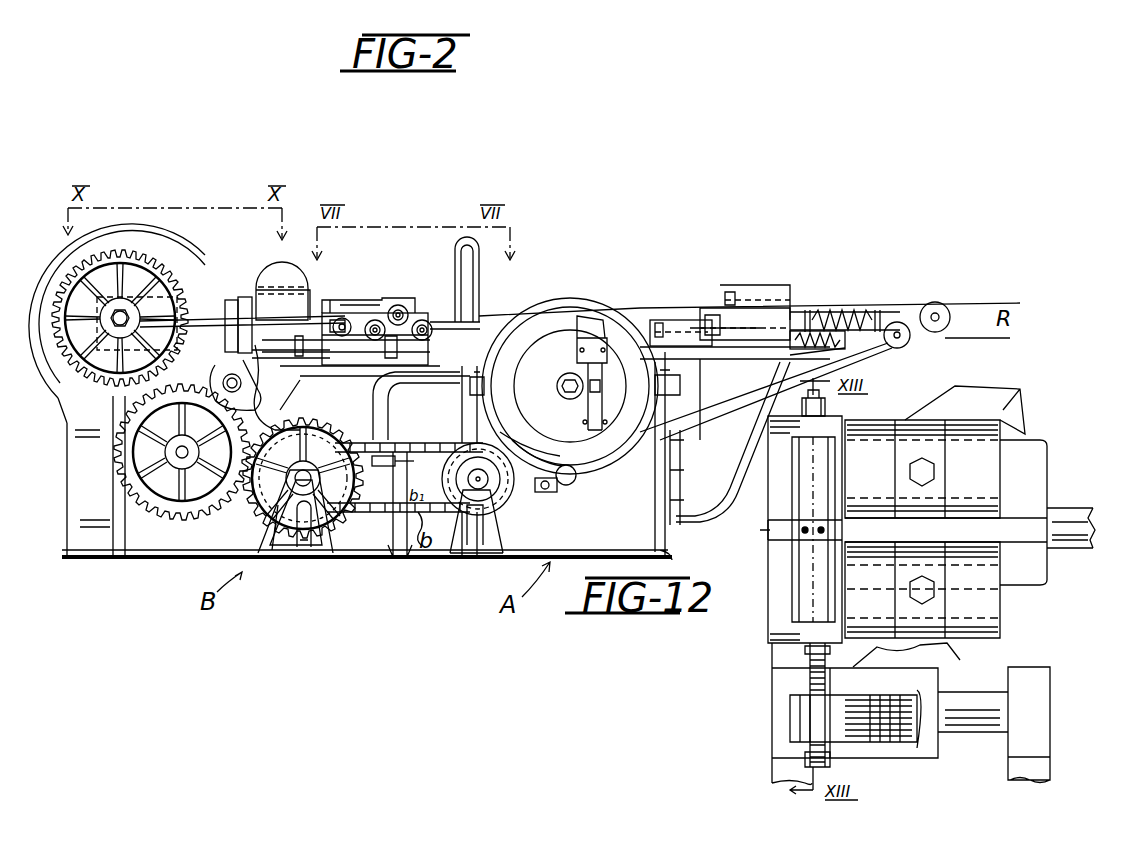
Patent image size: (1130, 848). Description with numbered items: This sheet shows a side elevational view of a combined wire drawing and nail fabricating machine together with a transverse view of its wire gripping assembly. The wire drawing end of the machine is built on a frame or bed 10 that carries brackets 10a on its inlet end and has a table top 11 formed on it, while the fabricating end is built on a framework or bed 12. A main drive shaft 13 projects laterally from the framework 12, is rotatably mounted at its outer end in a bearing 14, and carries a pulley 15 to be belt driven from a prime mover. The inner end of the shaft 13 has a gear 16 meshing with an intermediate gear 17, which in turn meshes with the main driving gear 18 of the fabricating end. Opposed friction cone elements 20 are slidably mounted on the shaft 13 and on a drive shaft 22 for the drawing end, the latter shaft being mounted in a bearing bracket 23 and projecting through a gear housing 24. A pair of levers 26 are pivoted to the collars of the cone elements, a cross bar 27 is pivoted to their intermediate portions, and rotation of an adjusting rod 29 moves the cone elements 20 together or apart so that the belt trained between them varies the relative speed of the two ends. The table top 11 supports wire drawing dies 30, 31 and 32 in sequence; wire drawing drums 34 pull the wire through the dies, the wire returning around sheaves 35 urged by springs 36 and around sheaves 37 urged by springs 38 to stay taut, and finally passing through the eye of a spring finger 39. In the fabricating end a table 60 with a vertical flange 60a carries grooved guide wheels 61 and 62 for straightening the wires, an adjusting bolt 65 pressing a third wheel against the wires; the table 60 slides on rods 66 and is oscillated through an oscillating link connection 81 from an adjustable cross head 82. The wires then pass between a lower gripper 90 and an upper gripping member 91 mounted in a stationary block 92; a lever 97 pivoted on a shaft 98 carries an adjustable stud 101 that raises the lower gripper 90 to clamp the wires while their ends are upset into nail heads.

In FIG. 2, the frame or bed 10 is at (672, 554).
In FIG. 2, the brackets 10a is at (725, 495).
In FIG. 2, the table top 11 is at (720, 362).
In FIG. 2, the framework or bed 12 is at (147, 540).
In FIG. 12, the framework or bed 12 is at (1042, 683).
In FIG. 2, the main drive shaft 13 is at (298, 484).
In FIG. 2, the bearing 14 is at (332, 552).
In FIG. 2, the pulley 15 is at (358, 522).
In FIG. 2, the gear 16 is at (270, 550).
In FIG. 2, the intermediate gear 17 is at (180, 521).
In FIG. 2, the main driving gear 18 is at (135, 258).
In FIG. 2, the friction cone elements 20 is at (443, 478).
In FIG. 2, the drive shaft 22 is at (478, 490).
In FIG. 2, the bearing bracket 23 is at (482, 490).
In FIG. 2, the gear housing 24 is at (482, 418).
In FIG. 2, the levers 26 is at (510, 472).
In FIG. 2, the cross bar 27 is at (404, 465).
In FIG. 2, the adjusting rod 29 is at (550, 492).
In FIG. 2, the wire drawing dies 30 is at (672, 320).
In FIG. 2, the wire drawing dies 31 is at (701, 316).
In FIG. 2, the wire drawing dies 32 is at (756, 302).
In FIG. 2, the wire drawing drums 34 is at (580, 326).
In FIG. 2, the sheaves 35 is at (906, 346).
In FIG. 2, the springs 36 is at (830, 349).
In FIG. 2, the sheaves 37 is at (949, 311).
In FIG. 2, the springs 38 is at (862, 318).
In FIG. 2, the spring finger 39 is at (455, 290).
In FIG. 2, the table 60 is at (412, 354).
In FIG. 2, the vertical flange 60a is at (366, 300).
In FIG. 2, the grooved guide wheel 61 is at (430, 336).
In FIG. 2, the grooved guide wheel 62 is at (385, 358).
In FIG. 2, the adjusting bolt 65 is at (408, 315).
In FIG. 2, the rods 66 is at (307, 382).
In FIG. 2, the oscillating link connection 81 is at (232, 312).
In FIG. 2, the adjustable cross head 82 is at (128, 318).
In FIG. 12, the gripper 90 is at (800, 616).
In FIG. 12, the gripping member 91 is at (797, 477).
In FIG. 12, the stationary block 92 is at (776, 540).
In FIG. 12, the lever 97 is at (953, 648).
In FIG. 12, the shaft 98 is at (968, 730).
In FIG. 12, the adjustable stud 101 is at (810, 681).